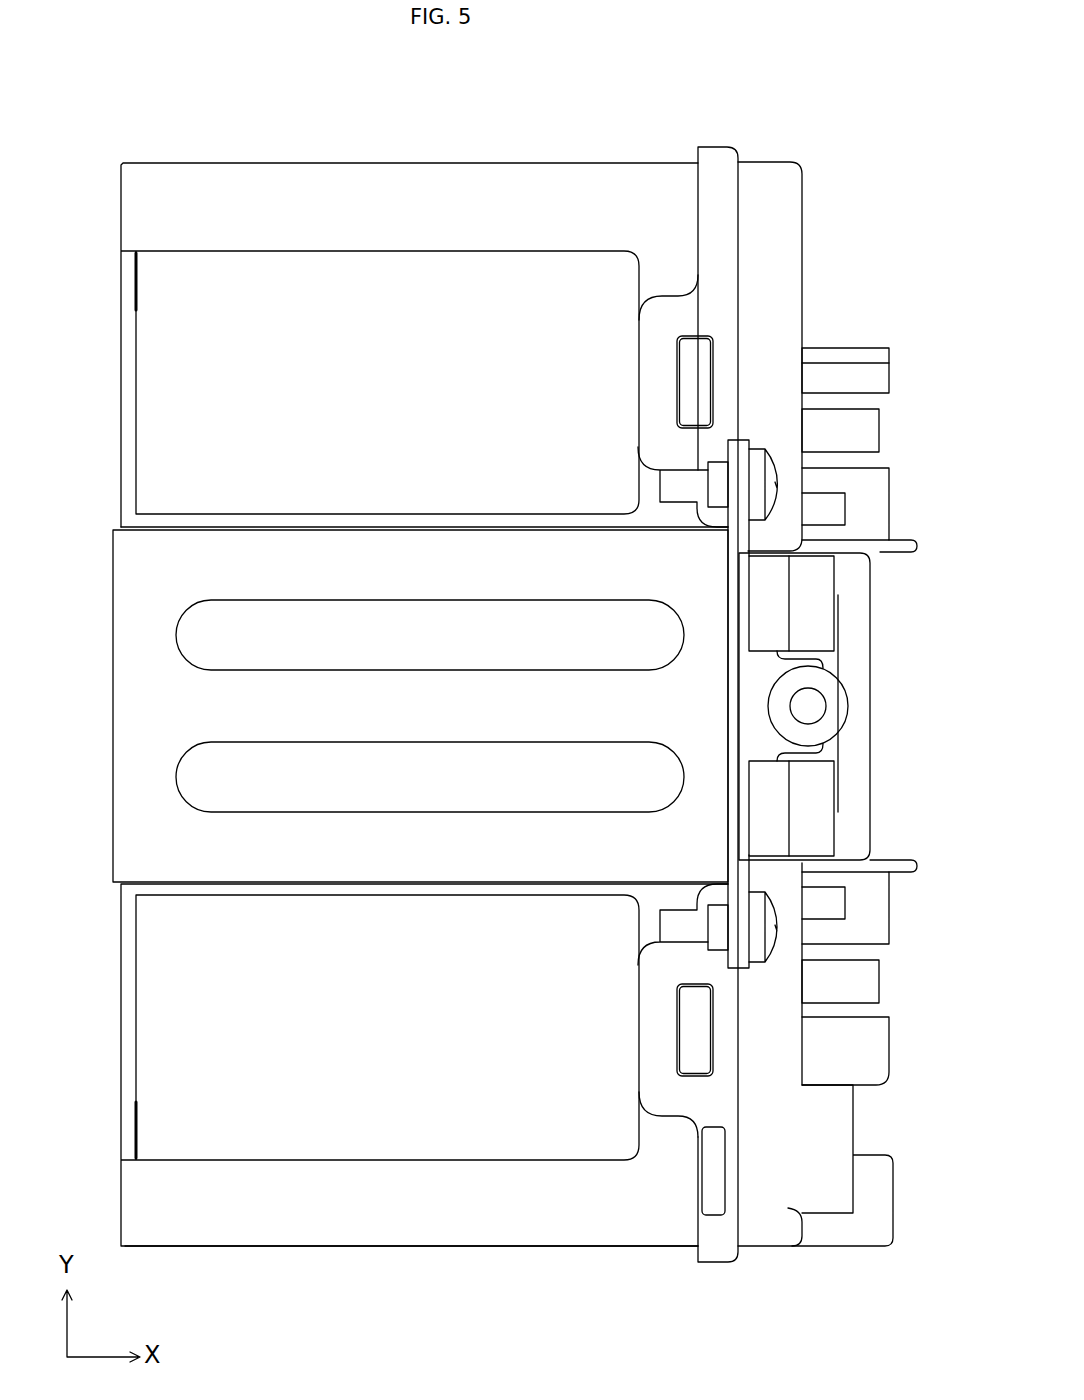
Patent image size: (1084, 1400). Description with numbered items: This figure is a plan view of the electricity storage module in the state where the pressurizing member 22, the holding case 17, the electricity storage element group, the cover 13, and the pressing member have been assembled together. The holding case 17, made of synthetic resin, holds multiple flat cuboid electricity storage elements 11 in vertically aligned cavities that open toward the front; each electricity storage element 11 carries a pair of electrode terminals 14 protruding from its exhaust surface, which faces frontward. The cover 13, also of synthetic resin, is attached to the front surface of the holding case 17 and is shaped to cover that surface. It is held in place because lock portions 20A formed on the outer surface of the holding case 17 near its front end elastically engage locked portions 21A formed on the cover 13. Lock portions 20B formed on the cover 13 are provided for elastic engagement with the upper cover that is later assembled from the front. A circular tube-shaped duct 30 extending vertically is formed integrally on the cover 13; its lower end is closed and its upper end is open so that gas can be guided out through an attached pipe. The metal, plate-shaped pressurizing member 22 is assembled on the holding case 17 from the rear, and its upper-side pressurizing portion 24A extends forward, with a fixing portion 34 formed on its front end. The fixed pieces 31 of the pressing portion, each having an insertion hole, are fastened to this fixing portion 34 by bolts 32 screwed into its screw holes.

The electricity storage element 11 is at (163, 398).
The cover 13 is at (782, 201).
The electrode terminal 14 is at (866, 429).
The holding case 17 is at (428, 1226).
The lock portion 20A is at (716, 357).
The lock portion 20B is at (711, 146).
The locked portion 21A is at (650, 382).
The pressurizing member 22 is at (163, 705).
The pressurizing portion 24A is at (163, 802).
The duct 30 is at (835, 717).
The fixed piece 31 is at (745, 570).
The bolt 32 is at (768, 477).
The fixing portion 34 is at (733, 593).